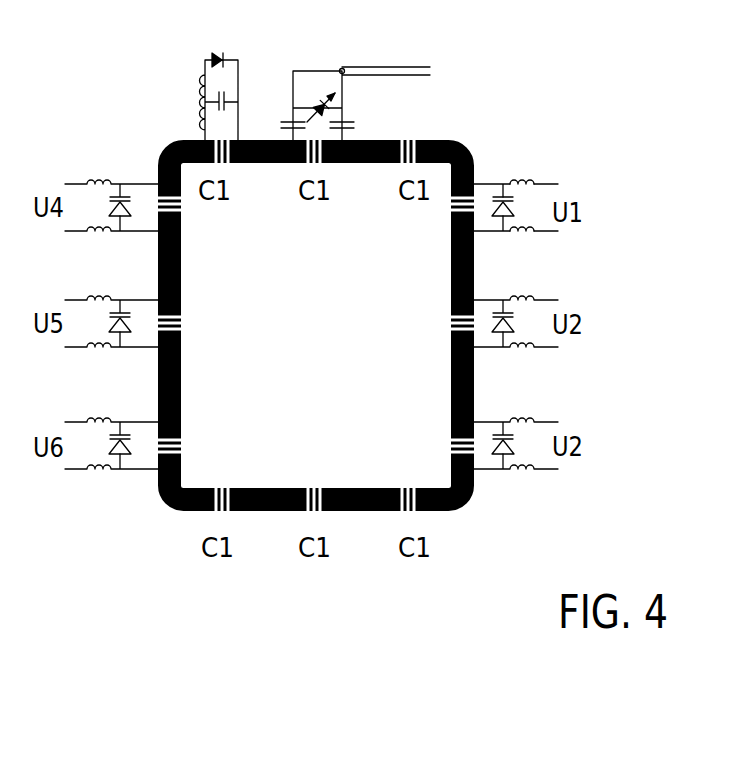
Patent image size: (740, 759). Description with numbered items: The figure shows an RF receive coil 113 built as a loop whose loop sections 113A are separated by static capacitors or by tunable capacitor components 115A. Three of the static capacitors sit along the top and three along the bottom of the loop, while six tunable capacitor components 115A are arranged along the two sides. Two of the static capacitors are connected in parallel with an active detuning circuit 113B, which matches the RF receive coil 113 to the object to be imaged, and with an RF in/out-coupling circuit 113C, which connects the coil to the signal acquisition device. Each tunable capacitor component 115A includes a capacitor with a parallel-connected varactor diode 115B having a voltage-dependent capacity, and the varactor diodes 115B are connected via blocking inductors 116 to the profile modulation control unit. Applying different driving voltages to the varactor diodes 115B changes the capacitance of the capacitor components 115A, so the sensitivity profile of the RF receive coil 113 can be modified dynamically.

The RF receive coil 113 is at (256, 258).
The loop section 113A is at (158, 155).
The active detuning circuit 113B is at (210, 80).
The RF in/out-coupling circuit 113C is at (330, 85).
The tunable capacitor component 115A is at (588, 217).
The varactor diode 115B is at (508, 213).
The blocking inductor 116 is at (531, 237).